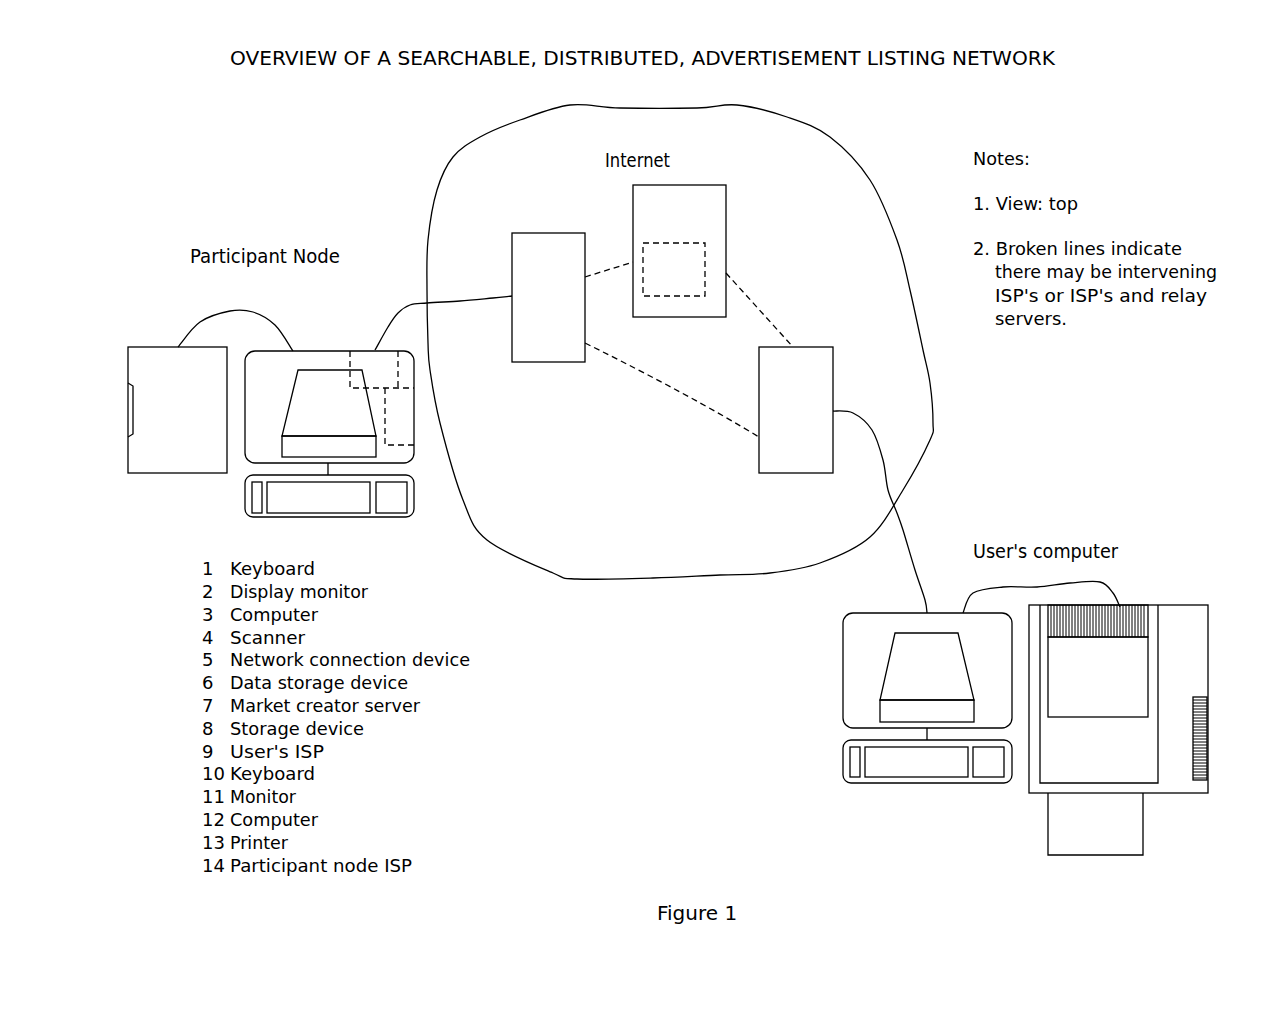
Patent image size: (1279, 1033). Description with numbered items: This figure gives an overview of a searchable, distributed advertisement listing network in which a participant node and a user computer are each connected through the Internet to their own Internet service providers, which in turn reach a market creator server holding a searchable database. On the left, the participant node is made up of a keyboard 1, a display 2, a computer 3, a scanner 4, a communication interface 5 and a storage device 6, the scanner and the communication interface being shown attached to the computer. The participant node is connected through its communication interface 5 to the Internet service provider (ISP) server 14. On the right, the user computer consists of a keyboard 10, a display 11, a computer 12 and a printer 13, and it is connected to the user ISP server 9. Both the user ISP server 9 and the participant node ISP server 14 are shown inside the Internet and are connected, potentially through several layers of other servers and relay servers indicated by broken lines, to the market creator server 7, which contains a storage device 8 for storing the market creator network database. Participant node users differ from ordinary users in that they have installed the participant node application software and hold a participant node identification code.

The keyboard 1 is at (329, 496).
The display 2 is at (329, 413).
The computer 3 is at (329, 407).
The scanner 4 is at (177, 410).
The communication interface 5 is at (382, 369).
The storage device 6 is at (399, 416).
The market creator server 7 is at (679, 251).
The storage device 8 is at (674, 269).
The user ISP server 9 is at (796, 410).
The keyboard 10 is at (927, 761).
The display 11 is at (927, 677).
The computer 12 is at (927, 670).
The printer 13 is at (1118, 730).
The Internet service provider server 14 is at (548, 297).